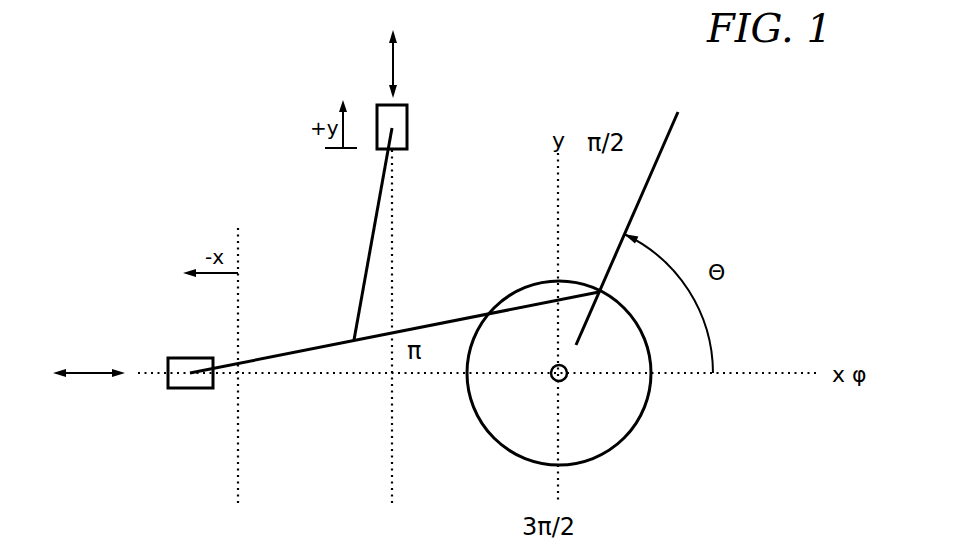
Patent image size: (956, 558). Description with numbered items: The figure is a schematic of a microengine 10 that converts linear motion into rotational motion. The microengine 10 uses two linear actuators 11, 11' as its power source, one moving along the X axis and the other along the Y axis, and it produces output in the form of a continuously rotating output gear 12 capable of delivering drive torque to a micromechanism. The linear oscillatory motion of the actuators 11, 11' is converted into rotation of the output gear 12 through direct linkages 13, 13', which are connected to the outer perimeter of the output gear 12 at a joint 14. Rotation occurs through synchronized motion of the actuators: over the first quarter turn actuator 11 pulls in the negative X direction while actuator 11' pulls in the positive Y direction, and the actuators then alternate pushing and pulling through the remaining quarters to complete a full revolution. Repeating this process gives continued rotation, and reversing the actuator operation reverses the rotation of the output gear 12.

The microengine 10 is at (196, 76).
The linear actuator 11 is at (169, 390).
The linear actuator 11' is at (420, 114).
The output gear 12 is at (607, 423).
The direct linkage 13 is at (394, 332).
The direct linkage 13' is at (346, 234).
The joint 14 is at (597, 287).